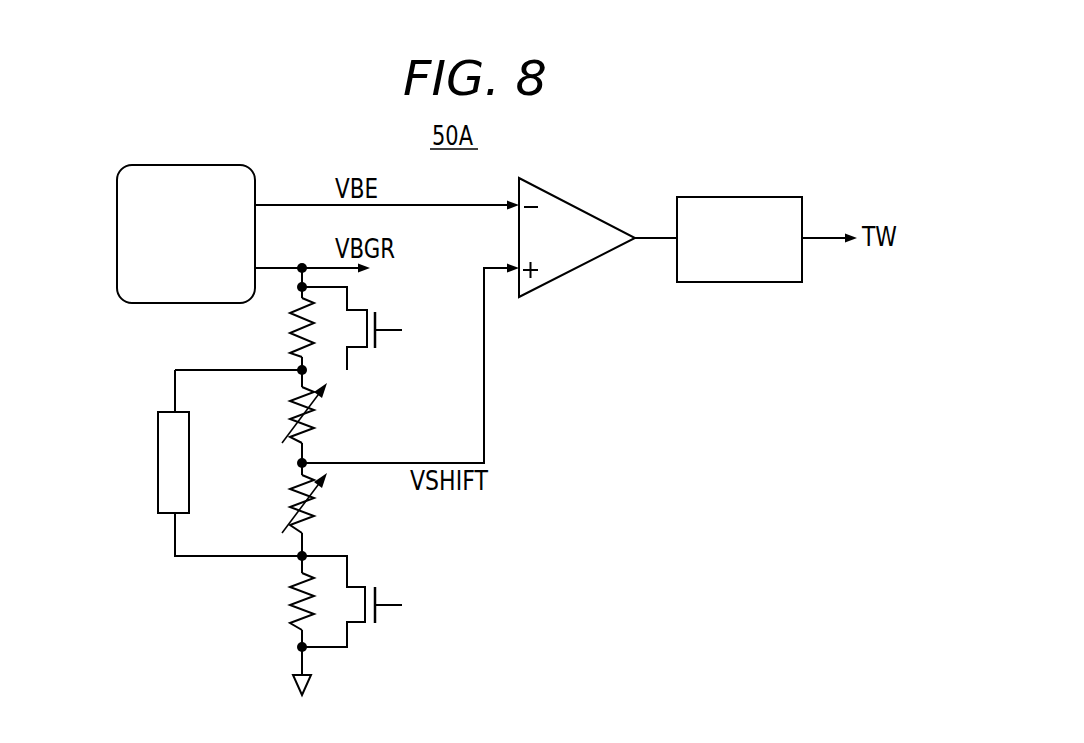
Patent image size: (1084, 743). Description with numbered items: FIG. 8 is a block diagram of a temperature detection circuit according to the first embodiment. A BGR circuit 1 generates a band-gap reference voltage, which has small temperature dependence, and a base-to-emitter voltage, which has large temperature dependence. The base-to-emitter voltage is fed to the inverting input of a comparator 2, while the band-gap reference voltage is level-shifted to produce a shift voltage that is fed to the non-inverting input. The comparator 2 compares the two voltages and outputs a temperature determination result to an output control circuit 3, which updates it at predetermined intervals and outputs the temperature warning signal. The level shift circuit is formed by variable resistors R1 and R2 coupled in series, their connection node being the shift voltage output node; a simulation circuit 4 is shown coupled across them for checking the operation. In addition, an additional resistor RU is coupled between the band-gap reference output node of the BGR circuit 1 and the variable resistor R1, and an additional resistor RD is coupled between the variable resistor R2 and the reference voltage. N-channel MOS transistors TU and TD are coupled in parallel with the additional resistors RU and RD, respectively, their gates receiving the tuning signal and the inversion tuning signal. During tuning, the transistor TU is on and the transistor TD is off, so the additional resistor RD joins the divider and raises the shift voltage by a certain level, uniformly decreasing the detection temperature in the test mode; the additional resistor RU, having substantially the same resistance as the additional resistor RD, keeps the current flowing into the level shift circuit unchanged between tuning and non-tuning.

The BGR circuit 1 is at (211, 165).
The comparator 2 is at (584, 208).
The output control circuit 3 is at (760, 197).
The simulation circuit 4 is at (158, 470).
The additional resistor RU is at (290, 338).
The variable resistor R1 is at (290, 411).
The variable resistor R2 is at (290, 501).
The additional resistor RD is at (290, 596).
The N-channel MOS transistor TU is at (347, 308).
The N-channel MOS transistor TD is at (347, 585).